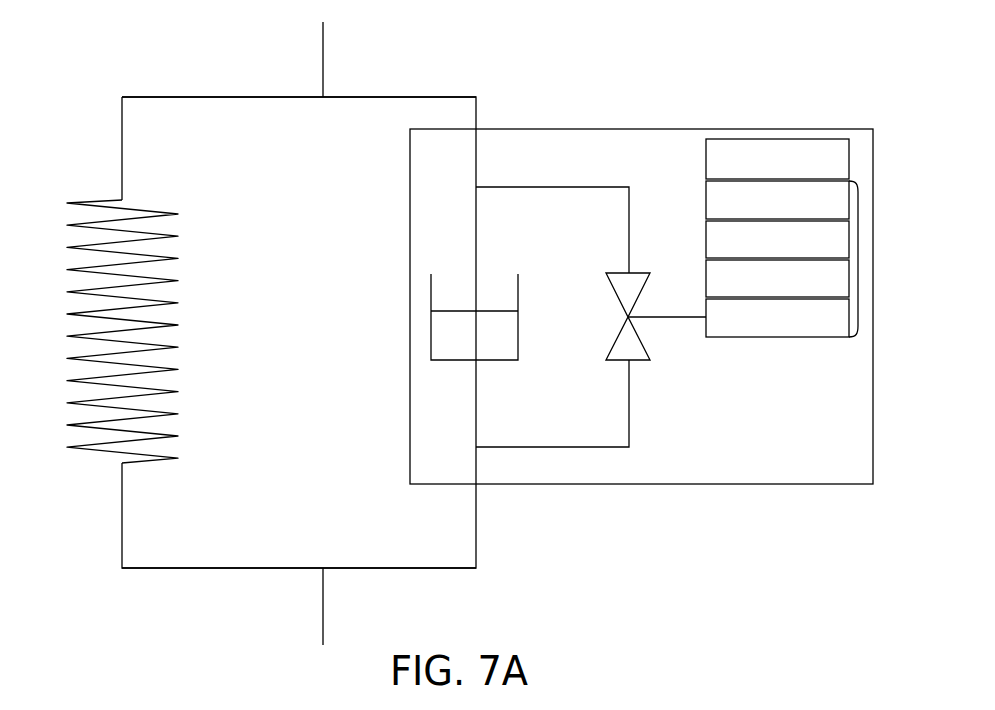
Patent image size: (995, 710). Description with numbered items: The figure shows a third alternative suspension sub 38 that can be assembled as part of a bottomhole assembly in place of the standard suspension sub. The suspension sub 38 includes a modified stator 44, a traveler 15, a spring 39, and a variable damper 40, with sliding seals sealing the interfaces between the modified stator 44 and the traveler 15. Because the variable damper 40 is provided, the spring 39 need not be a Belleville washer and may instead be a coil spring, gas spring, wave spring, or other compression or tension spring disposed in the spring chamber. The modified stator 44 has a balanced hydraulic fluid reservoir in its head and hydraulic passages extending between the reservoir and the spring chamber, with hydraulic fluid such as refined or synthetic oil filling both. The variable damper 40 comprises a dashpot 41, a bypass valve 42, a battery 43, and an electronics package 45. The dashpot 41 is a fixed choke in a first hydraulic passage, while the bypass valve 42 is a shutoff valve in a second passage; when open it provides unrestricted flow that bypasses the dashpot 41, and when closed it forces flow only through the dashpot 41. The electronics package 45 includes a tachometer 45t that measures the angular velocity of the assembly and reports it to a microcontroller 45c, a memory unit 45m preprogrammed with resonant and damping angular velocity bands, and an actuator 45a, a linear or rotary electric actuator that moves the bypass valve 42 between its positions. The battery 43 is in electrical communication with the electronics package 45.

The third alternative suspension sub 38 is at (85, 86).
The modified stator 44 is at (273, 97).
The traveler 15 is at (198, 568).
The spring 39 is at (179, 325).
The variable damper 40 is at (603, 129).
The dashpot 41 is at (519, 325).
The bypass valve 42 is at (626, 349).
The battery 43 is at (706, 155).
The tachometer 45t is at (706, 196).
The memory unit 45m is at (706, 237).
The microcontroller 45c is at (706, 284).
The actuator 45a is at (752, 338).
The electronics package 45 is at (858, 258).